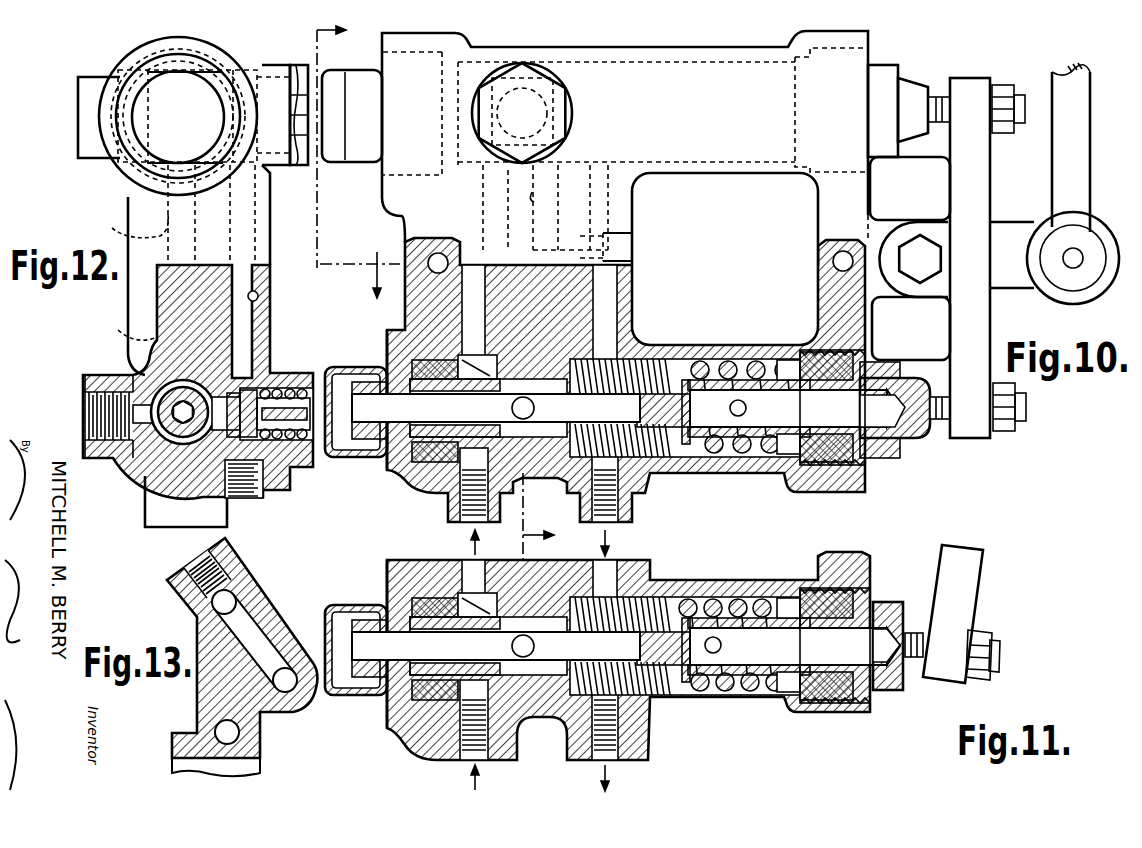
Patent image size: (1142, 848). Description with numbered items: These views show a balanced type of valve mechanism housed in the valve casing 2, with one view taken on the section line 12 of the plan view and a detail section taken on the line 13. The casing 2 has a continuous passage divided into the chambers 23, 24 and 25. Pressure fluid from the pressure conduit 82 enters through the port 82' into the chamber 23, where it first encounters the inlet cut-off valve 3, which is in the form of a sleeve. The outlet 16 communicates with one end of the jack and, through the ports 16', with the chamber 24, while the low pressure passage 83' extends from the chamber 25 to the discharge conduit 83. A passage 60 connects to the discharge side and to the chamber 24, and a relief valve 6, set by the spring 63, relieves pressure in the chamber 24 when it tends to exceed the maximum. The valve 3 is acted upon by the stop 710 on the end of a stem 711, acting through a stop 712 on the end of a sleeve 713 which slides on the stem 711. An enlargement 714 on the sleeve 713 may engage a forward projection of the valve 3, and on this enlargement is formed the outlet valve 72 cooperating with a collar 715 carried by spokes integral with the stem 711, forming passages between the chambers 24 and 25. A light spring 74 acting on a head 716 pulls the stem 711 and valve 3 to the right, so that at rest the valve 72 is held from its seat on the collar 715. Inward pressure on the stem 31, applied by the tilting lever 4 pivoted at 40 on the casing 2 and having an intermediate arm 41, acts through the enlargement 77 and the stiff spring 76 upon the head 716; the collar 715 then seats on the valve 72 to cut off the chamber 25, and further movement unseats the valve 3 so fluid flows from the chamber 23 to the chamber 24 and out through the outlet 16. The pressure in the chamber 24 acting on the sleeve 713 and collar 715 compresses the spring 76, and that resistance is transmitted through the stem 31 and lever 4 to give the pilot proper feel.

In FIG. 12, the valve casing 2 is at (130, 198).
In FIG. 10, the valve casing 2 is at (667, 50).
In FIG. 12, the inlet cut-off valve 3 is at (172, 482).
In FIG. 13, the inlet cut-off valve 3 is at (242, 657).
In FIG. 10, the inlet cut-off valve 3 is at (420, 502).
In FIG. 11, the inlet cut-off valve 3 is at (440, 737).
In FIG. 10, the tilting lever 4 is at (985, 178).
In FIG. 11, the tilting lever 4 is at (975, 598).
In FIG. 12, the relief valve 6 is at (245, 395).
In FIG. 10, the relief valve 6 is at (528, 97).
In FIG. 10, the section line 12— 12 is at (433, 286).
In FIG. 10, the section line 13— 13 is at (522, 270).
In FIG. 12, the outlet 16 is at (102, 413).
In FIG. 11, the outlet 16 is at (530, 729).
In FIG. 12, the ports 16' is at (78, 117).
In FIG. 10, the ports 16' is at (352, 116).
In FIG. 10, the chamber 23 is at (388, 494).
In FIG. 11, the chamber 23 is at (400, 728).
In FIG. 10, the chamber 24 is at (542, 489).
In FIG. 11, the chamber 24 is at (540, 552).
In FIG. 10, the chamber 25 is at (652, 475).
In FIG. 11, the chamber 25 is at (655, 700).
In FIG. 10, the stem 31 is at (905, 88).
In FIG. 11, the stem 31 is at (880, 605).
In FIG. 10, the pivot 40 is at (921, 258).
In FIG. 10, the intermediate arm 41 is at (1082, 252).
In FIG. 12, the passage 60 is at (258, 296).
In FIG. 13, the passage 60 is at (287, 690).
In FIG. 10, the passage 60 is at (534, 200).
In FIG. 12, the spring 63 is at (287, 482).
In FIG. 10, the outlet valve 72 is at (628, 348).
In FIG. 11, the outlet valve 72 is at (560, 725).
In FIG. 10, the light spring 74 is at (688, 362).
In FIG. 11, the light spring 74 is at (640, 600).
In FIG. 10, the stiff spring 76 is at (728, 362).
In FIG. 11, the stiff spring 76 is at (700, 600).
In FIG. 10, the enlargement 77 is at (792, 358).
In FIG. 11, the enlargement 77 is at (775, 598).
In FIG. 10, the pressure conduit 82 is at (474, 501).
In FIG. 11, the pressure conduit 82 is at (474, 735).
In FIG. 12, the port 82' is at (121, 225).
In FIG. 13, the port 82' is at (256, 751).
In FIG. 10, the port 82' is at (451, 375).
In FIG. 11, the port 82' is at (471, 659).
In FIG. 10, the discharge conduit 83 is at (616, 382).
In FIG. 11, the discharge conduit 83 is at (628, 735).
In FIG. 12, the low pressure passage 83' is at (157, 435).
In FIG. 13, the low pressure passage 83' is at (189, 583).
In FIG. 11, the low pressure passage 83' is at (592, 565).
In FIG. 10, the stop 710 is at (345, 458).
In FIG. 11, the stop 710 is at (345, 630).
In FIG. 12, the stem 711 is at (122, 462).
In FIG. 10, the stem 711 is at (350, 420).
In FIG. 11, the stem 711 is at (668, 600).
In FIG. 10, the stop 712 is at (375, 462).
In FIG. 11, the stop 712 is at (375, 690).
In FIG. 10, the sleeve 713 is at (435, 411).
In FIG. 11, the sleeve 713 is at (392, 602).
In FIG. 12, the enlargement 714 is at (137, 473).
In FIG. 10, the enlargement 714 is at (527, 383).
In FIG. 11, the enlargement 714 is at (478, 600).
In FIG. 10, the collar 715 is at (545, 509).
In FIG. 11, the collar 715 is at (558, 747).
In FIG. 10, the head 716 is at (690, 455).
In FIG. 11, the head 716 is at (682, 700).